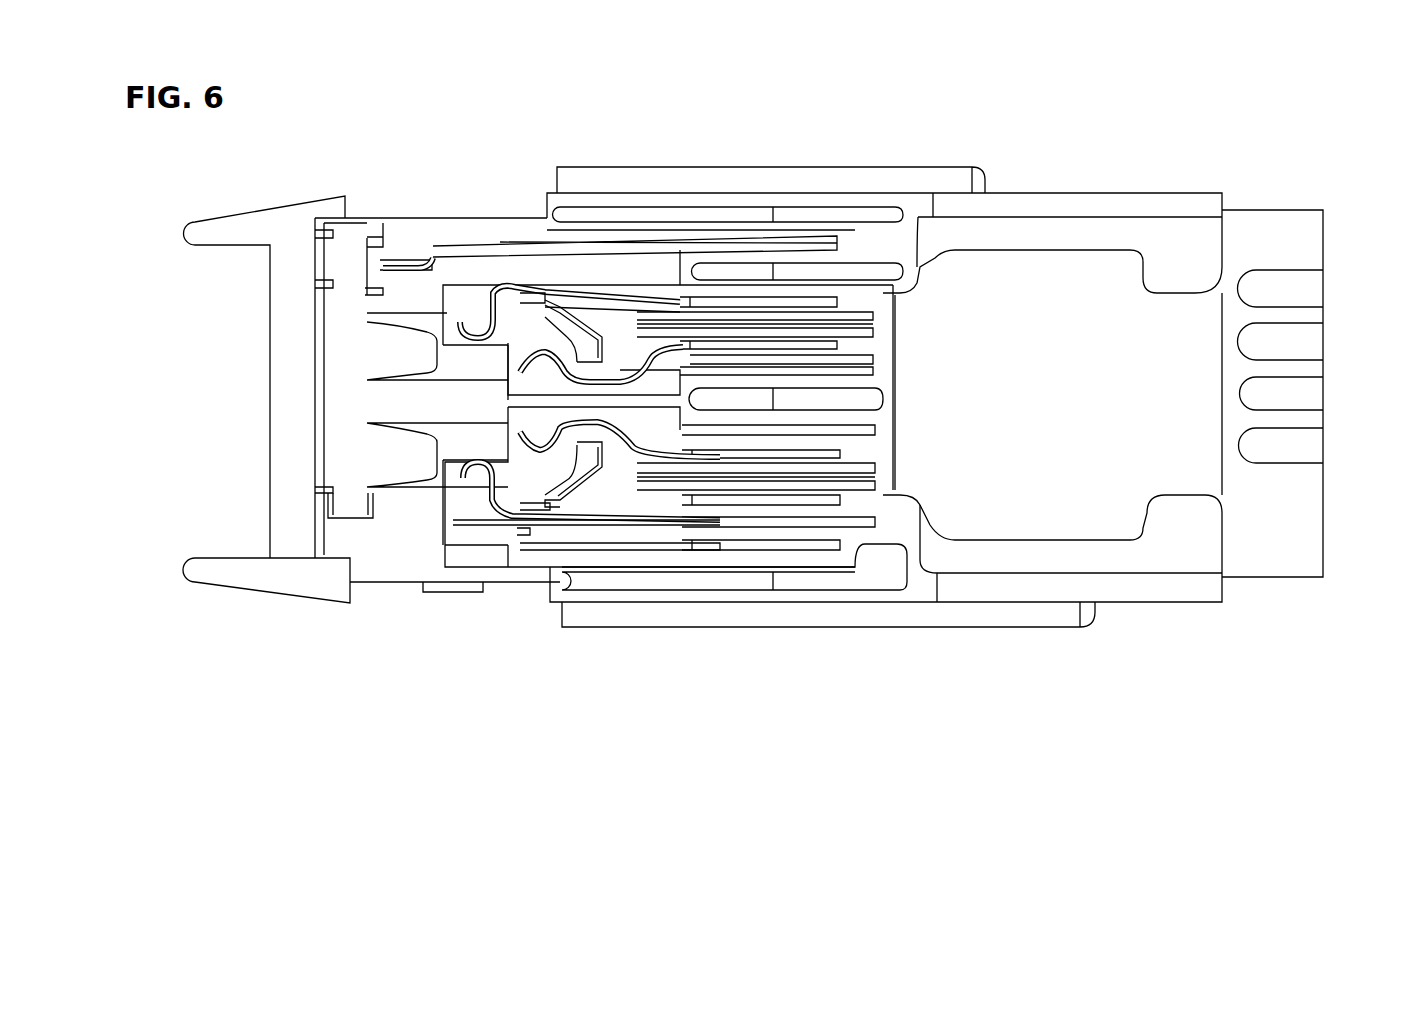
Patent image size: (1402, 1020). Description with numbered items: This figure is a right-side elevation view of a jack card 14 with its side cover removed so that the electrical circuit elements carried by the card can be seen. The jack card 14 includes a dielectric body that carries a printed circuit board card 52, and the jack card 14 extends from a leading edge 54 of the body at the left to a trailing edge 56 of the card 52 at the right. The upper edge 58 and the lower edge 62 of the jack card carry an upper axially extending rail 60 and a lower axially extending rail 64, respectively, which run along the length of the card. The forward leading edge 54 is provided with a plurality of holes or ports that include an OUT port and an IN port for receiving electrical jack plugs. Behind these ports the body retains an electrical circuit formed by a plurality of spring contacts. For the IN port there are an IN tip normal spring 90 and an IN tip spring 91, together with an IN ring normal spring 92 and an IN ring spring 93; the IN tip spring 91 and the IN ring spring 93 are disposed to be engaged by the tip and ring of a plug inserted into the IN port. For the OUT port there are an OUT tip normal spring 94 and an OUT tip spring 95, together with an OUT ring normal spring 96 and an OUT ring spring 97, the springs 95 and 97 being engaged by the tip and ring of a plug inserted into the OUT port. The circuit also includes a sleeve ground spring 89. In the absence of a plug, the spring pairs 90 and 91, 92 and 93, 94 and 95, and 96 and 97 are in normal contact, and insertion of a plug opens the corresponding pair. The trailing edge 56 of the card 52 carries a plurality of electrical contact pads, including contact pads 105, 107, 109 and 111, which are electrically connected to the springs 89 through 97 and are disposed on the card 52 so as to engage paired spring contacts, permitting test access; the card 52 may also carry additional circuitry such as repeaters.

The jack card 14 is at (157, 272).
The printed circuit board card 52 is at (1265, 527).
The leading edge 54 is at (270, 402).
The trailing edge 56 is at (1322, 498).
The upper edge 58 is at (550, 193).
The upper axially extending rail 60 is at (690, 166).
The lower edge 62 is at (557, 608).
The lower axially extending rail 64 is at (663, 628).
The sleeve ground spring 89 is at (405, 250).
The IN tip normal spring 90 is at (617, 445).
The IN tip spring 91 is at (530, 448).
The IN ring normal spring 92 is at (580, 502).
The IN ring spring 93 is at (478, 470).
The OUT tip normal spring 94 is at (612, 358).
The OUT tip spring 95 is at (528, 366).
The OUT ring normal spring 96 is at (525, 292).
The OUT ring spring 97 is at (473, 312).
The electrical contact pad 105 is at (1305, 444).
The electrical contact pad 107 is at (1322, 388).
The electrical contact pad 109 is at (1305, 343).
The electrical contact pad 111 is at (1308, 287).